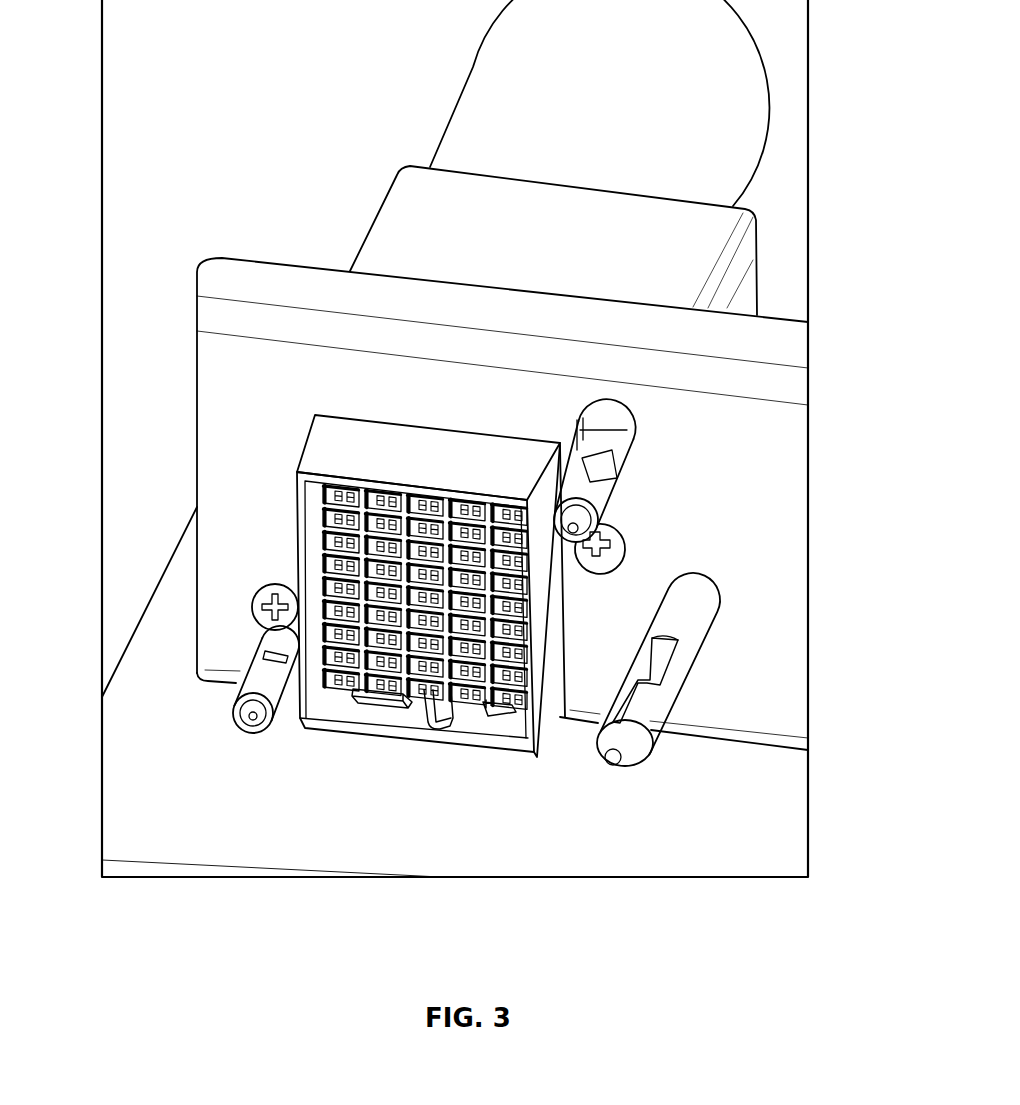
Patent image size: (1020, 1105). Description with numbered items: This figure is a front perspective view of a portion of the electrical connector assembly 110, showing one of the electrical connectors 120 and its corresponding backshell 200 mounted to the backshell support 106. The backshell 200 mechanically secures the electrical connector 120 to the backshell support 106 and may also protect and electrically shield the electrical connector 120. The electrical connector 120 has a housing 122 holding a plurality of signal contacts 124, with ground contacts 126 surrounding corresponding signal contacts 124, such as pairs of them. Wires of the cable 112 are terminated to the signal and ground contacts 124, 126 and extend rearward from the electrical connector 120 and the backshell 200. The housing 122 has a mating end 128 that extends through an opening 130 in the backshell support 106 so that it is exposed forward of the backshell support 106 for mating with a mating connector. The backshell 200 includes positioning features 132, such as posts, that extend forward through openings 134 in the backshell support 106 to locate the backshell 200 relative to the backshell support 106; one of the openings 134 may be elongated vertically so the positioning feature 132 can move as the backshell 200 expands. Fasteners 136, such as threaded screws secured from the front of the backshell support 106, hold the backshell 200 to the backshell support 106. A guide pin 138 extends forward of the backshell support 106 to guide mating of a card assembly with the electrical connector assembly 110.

The backshell support 106 is at (210, 387).
The electrical connector assembly 110 is at (262, 198).
The cable 112 is at (490, 100).
The electrical connector 120 is at (355, 705).
The housing 122 is at (387, 713).
The signal contacts 124 is at (422, 702).
The ground contacts 126 is at (442, 670).
The mating end 128 is at (307, 735).
The opening 130 is at (313, 420).
The positioning features 132 is at (608, 504).
The openings 134 is at (628, 429).
The fasteners 136 is at (625, 540).
The guide pin 138 is at (653, 710).
The backshell 200 is at (710, 253).